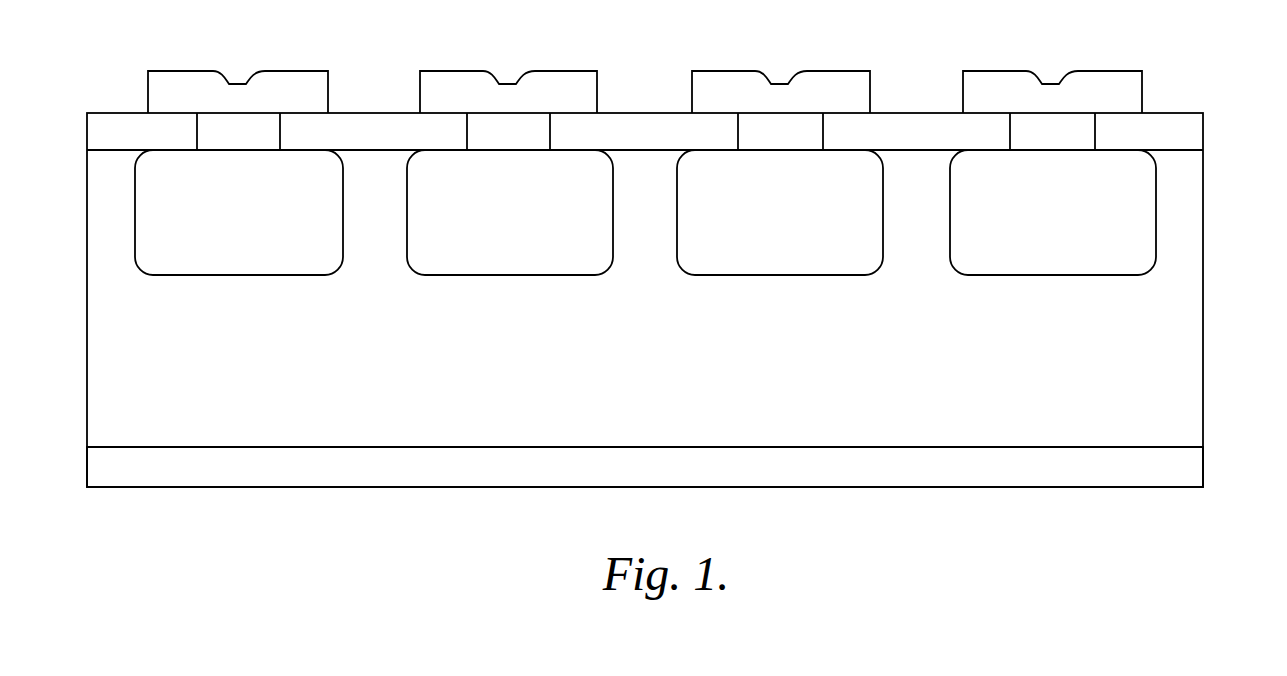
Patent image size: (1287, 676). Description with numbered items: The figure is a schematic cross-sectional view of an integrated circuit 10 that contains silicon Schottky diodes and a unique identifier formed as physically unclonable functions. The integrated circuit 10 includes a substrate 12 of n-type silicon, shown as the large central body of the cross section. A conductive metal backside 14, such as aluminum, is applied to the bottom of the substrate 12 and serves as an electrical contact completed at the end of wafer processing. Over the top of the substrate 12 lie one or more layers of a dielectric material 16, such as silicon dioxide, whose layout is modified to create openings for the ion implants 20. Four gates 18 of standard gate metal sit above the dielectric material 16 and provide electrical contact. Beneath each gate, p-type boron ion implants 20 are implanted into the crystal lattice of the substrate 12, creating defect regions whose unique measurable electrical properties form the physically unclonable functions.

The integrated circuit 10 is at (687, 281).
The substrate 12 is at (1188, 361).
The backside 14 is at (1190, 472).
The dielectric material 16 is at (1192, 120).
The gates 18 is at (855, 72).
The ion implants 20 is at (1142, 205).